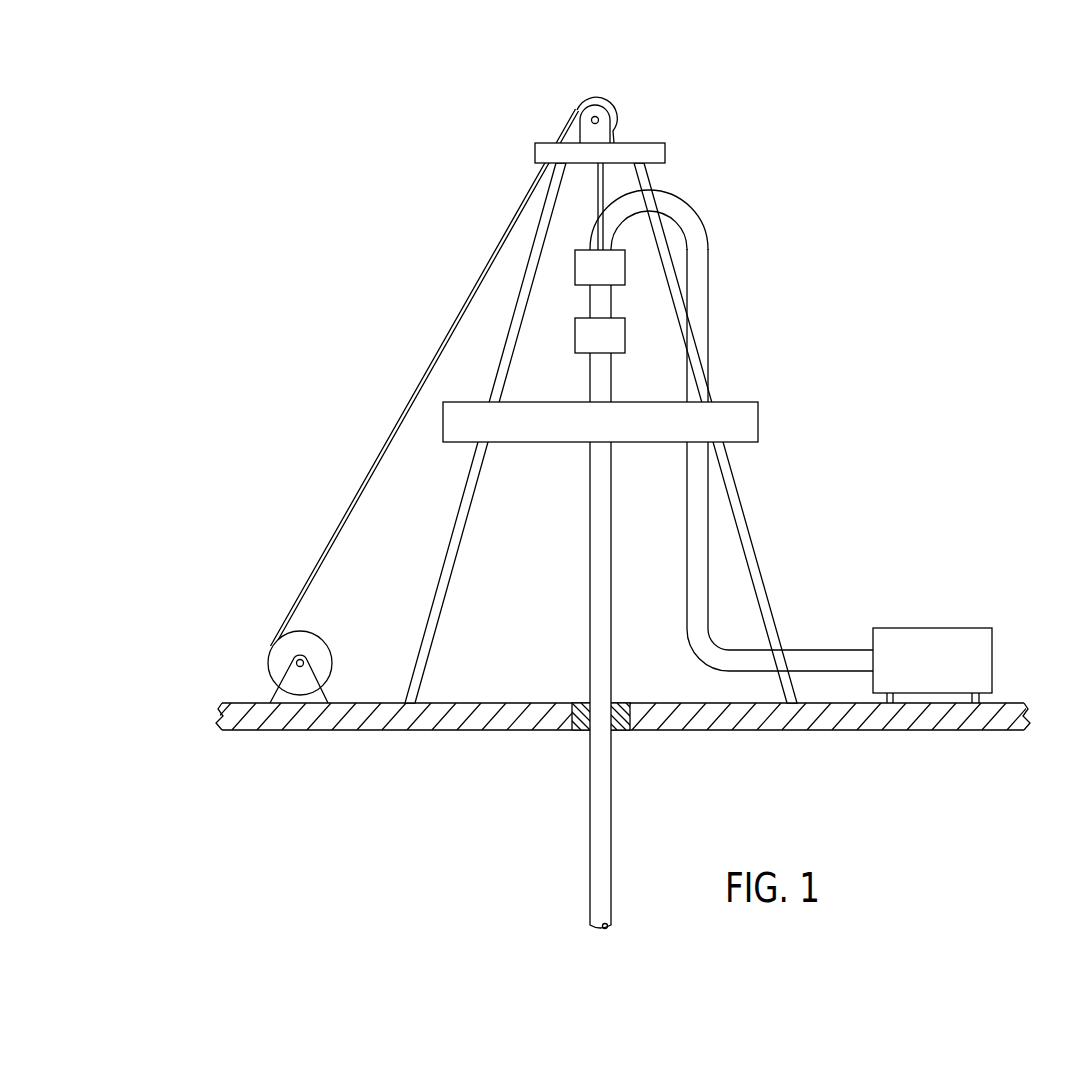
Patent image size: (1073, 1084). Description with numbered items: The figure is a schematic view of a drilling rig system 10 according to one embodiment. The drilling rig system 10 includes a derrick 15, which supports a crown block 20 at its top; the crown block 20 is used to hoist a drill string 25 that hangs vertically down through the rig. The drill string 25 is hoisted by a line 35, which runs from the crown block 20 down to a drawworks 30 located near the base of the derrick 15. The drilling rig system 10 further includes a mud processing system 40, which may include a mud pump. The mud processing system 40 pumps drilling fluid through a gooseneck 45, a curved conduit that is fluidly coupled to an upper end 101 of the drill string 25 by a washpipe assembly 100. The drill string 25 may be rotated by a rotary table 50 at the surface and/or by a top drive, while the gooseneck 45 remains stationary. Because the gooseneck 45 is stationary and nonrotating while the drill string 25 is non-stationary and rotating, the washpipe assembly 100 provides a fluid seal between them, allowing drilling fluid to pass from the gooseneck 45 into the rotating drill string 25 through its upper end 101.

The drilling rig system 10 is at (340, 253).
The derrick 15 is at (652, 190).
The crown block 20 is at (606, 102).
The drill string 25 is at (590, 608).
The drawworks 30 is at (316, 634).
The line 35 is at (360, 497).
The mud processing system 40 is at (953, 628).
The gooseneck 45 is at (697, 235).
The rotary table 50 is at (576, 731).
The washpipe assembly 100 is at (566, 290).
The upper end 101 is at (613, 380).